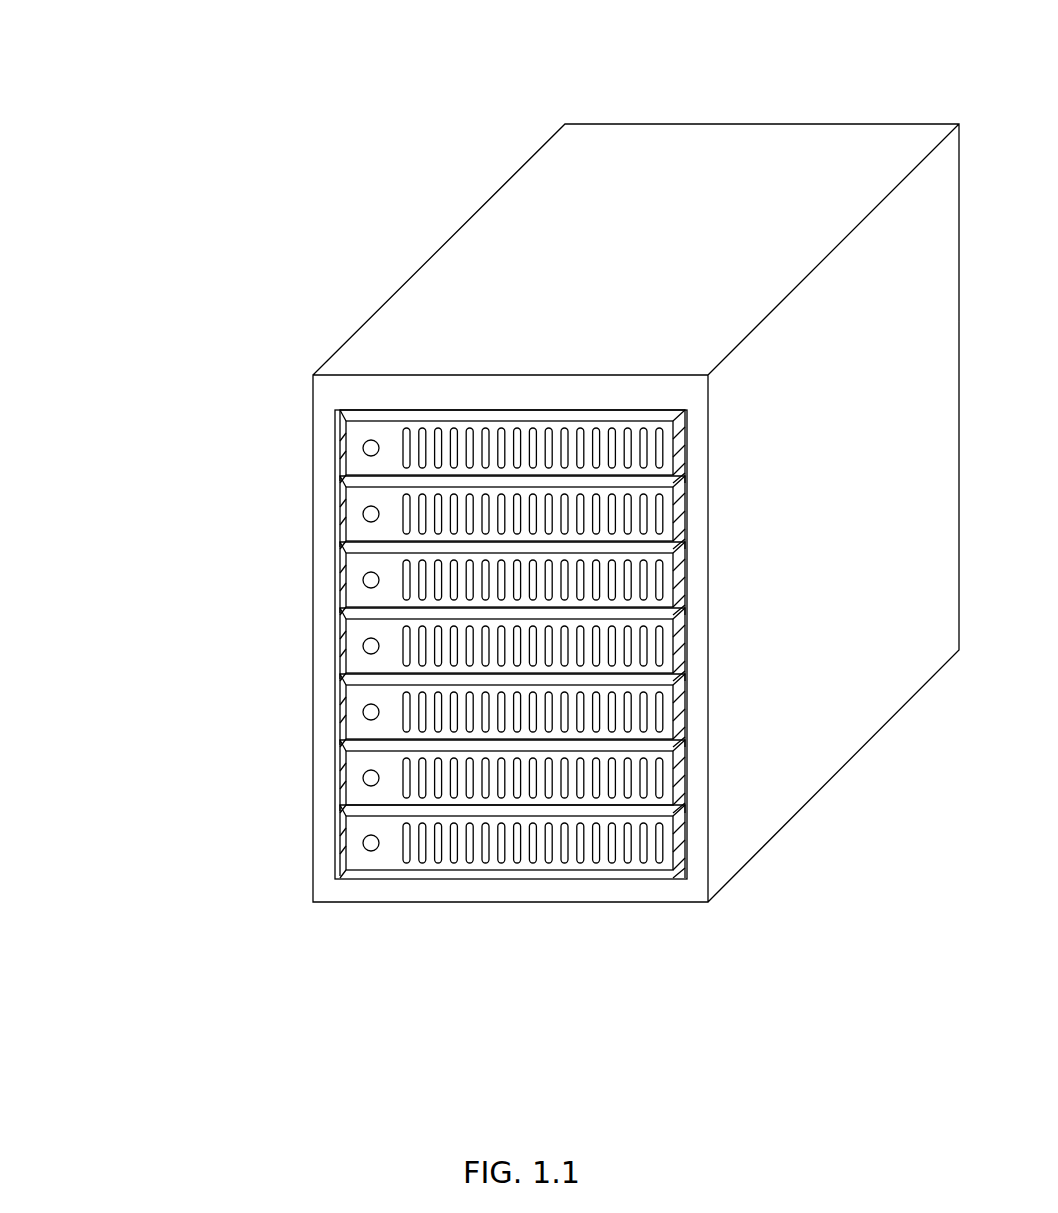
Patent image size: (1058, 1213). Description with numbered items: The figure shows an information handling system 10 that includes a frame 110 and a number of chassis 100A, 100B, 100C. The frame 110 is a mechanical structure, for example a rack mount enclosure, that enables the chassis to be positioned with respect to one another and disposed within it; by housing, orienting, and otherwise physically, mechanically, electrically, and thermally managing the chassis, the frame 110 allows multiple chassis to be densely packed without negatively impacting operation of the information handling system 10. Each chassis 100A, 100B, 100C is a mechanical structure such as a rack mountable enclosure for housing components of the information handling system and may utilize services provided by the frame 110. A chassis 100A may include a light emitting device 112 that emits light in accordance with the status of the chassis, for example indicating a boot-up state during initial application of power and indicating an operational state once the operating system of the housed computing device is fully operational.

The information handling system 10 is at (446, 103).
The chassis 100A is at (376, 396).
The chassis 100B is at (331, 505).
The chassis 100C is at (333, 577).
The frame 110 is at (766, 935).
The light emitting device 112 is at (335, 853).